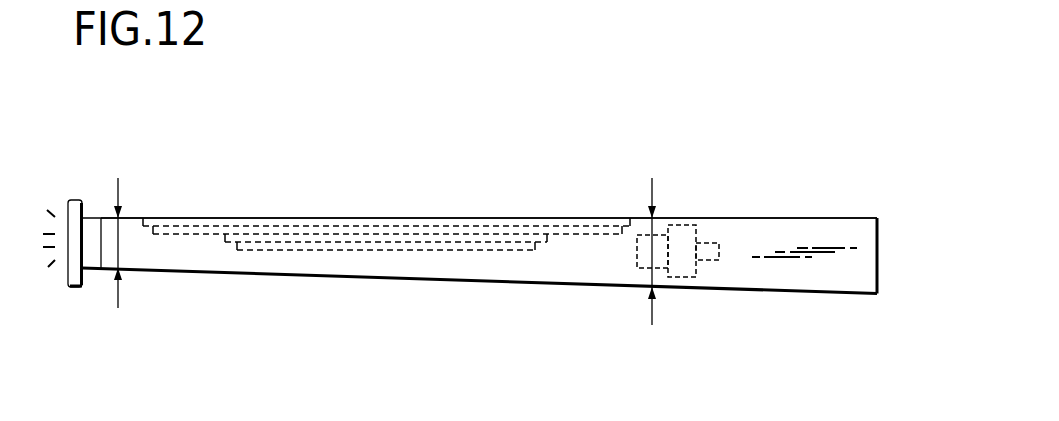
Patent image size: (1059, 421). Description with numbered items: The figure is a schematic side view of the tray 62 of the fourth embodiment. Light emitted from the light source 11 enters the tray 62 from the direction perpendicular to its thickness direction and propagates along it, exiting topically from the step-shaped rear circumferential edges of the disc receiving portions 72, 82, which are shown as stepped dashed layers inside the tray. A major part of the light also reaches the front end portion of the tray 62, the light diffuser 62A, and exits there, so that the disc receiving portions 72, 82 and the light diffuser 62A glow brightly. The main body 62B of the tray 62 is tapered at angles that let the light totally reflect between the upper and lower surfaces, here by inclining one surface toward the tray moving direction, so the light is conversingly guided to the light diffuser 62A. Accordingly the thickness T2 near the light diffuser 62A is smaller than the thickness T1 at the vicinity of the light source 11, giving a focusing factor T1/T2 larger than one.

The tray 62 is at (624, 118).
The light diffuser 62A is at (90, 218).
The light guide body portion 62B is at (527, 160).
The disc receiving portion 72 is at (387, 218).
The disc receiving portion 82 is at (386, 195).
The light source 11 is at (683, 218).
The thickness at the vicinity of the light source T1 is at (652, 252).
The thickness near the light diffuser T2 is at (118, 243).